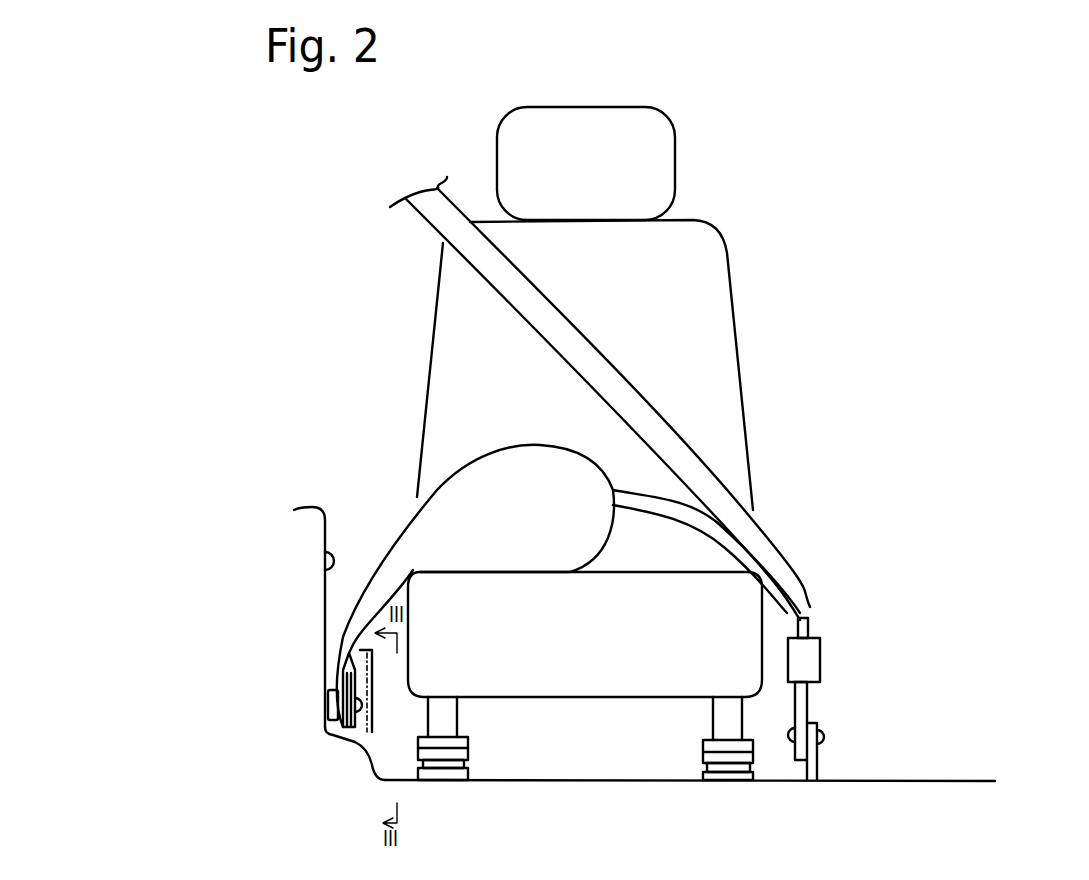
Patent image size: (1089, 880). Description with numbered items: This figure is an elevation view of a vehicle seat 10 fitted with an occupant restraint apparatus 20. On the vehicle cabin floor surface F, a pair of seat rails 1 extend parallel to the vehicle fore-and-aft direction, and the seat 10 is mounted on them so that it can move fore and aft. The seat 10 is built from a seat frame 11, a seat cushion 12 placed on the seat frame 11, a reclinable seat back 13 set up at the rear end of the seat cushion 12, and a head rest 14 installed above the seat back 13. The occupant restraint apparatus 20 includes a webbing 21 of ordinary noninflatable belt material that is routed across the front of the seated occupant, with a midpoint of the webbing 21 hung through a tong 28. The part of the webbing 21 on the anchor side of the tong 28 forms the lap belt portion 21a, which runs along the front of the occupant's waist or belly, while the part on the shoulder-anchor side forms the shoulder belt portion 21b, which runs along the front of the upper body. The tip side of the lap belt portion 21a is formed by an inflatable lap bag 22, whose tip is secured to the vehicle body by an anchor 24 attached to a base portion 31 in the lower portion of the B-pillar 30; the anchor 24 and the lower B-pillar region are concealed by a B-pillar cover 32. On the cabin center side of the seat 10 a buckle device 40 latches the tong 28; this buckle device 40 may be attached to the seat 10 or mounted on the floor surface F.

The vehicle seat 10 is at (648, 443).
The seat frame 11 is at (450, 718).
The seat cushion 12 is at (592, 677).
The seat back 13 is at (707, 245).
The head rest 14 is at (653, 153).
The seat rails 1 is at (495, 755).
The occupant restraint apparatus 20 is at (451, 603).
The webbing 21 is at (594, 415).
The lap belt portion 21a is at (683, 510).
The shoulder belt portion 21b is at (680, 425).
The lap bag 22 is at (505, 470).
The anchor 24 is at (357, 742).
The tong 28 is at (820, 655).
The B-pillar 30 is at (325, 570).
The base portion 31 is at (330, 707).
The B-pillar cover 32 is at (373, 700).
The buckle device 40 is at (828, 711).
The vehicle cabin floor surface F is at (975, 783).